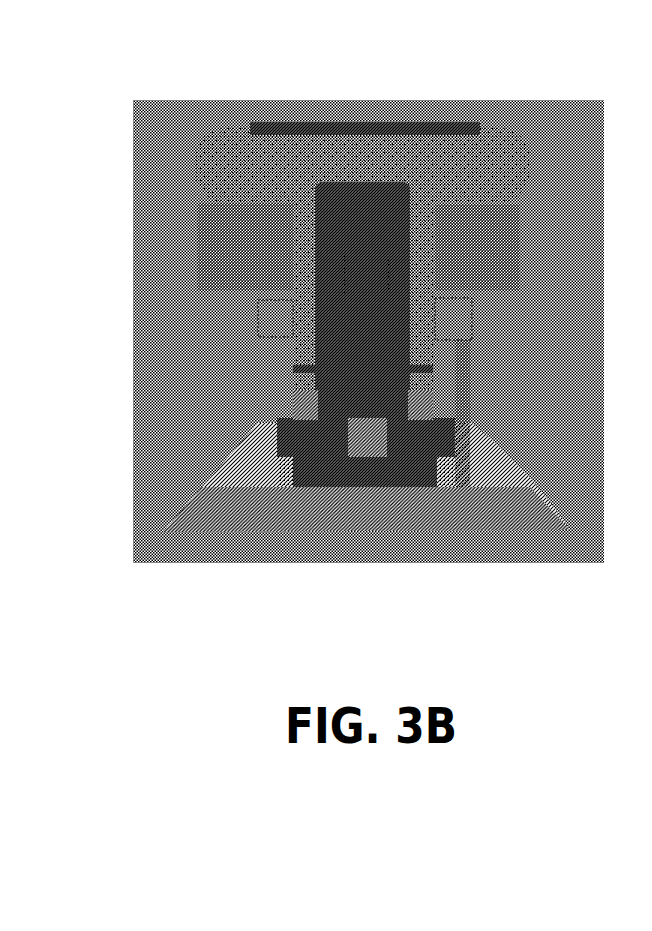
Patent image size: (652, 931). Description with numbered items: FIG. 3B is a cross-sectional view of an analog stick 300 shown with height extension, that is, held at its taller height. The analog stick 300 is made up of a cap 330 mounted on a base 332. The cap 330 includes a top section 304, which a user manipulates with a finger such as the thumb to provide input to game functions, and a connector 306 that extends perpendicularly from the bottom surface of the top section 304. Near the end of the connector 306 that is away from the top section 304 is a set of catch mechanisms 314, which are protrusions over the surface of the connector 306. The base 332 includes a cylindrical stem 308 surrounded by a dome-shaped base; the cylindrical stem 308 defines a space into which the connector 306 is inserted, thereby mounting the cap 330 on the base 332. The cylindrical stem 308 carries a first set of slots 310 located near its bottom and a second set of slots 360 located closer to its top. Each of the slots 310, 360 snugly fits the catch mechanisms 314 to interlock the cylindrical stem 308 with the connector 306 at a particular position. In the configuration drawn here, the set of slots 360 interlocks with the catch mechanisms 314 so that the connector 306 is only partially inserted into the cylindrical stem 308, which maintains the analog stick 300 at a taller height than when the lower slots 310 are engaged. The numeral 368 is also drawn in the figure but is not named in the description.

The analog stick 300 is at (142, 68).
The top section 304 is at (530, 160).
The connector 306 is at (306, 256).
The cylindrical stem 308 is at (453, 300).
The first set of slots 310 is at (278, 440).
The set of catch mechanisms 314 is at (285, 353).
The cap 330 is at (347, 160).
The base 332 is at (158, 518).
The second set of slots 360 is at (280, 336).
The spacers 368 is at (418, 378).